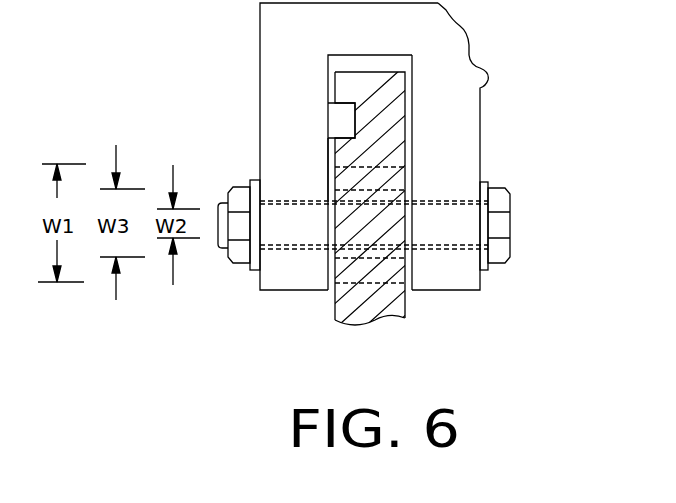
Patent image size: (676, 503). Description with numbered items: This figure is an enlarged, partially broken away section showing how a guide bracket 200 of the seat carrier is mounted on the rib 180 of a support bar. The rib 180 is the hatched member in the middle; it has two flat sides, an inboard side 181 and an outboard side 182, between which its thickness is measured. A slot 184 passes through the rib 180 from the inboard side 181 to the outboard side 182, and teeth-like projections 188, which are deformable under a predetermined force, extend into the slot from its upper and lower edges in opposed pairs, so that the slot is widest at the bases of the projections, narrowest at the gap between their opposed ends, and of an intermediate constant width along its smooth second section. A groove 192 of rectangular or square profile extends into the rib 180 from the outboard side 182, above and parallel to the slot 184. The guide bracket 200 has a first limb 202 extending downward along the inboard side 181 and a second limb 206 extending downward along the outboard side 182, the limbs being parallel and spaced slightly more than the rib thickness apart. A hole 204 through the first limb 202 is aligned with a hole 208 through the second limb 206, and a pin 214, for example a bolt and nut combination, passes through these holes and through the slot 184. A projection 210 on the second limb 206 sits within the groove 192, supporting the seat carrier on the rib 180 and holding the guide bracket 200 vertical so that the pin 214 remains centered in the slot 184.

The rib 180 is at (393, 122).
The inboard side 181 is at (408, 94).
The outboard side 182 is at (333, 79).
The slot 184 is at (402, 221).
The projections 188 is at (357, 277).
The groove 192 is at (343, 122).
The guide bracket 200 is at (288, 310).
The first limb 202 is at (437, 283).
The hole 204 is at (433, 243).
The second limb 206 is at (267, 278).
The hole 208 is at (278, 248).
The projection 210 is at (337, 128).
The pin 214 is at (505, 200).